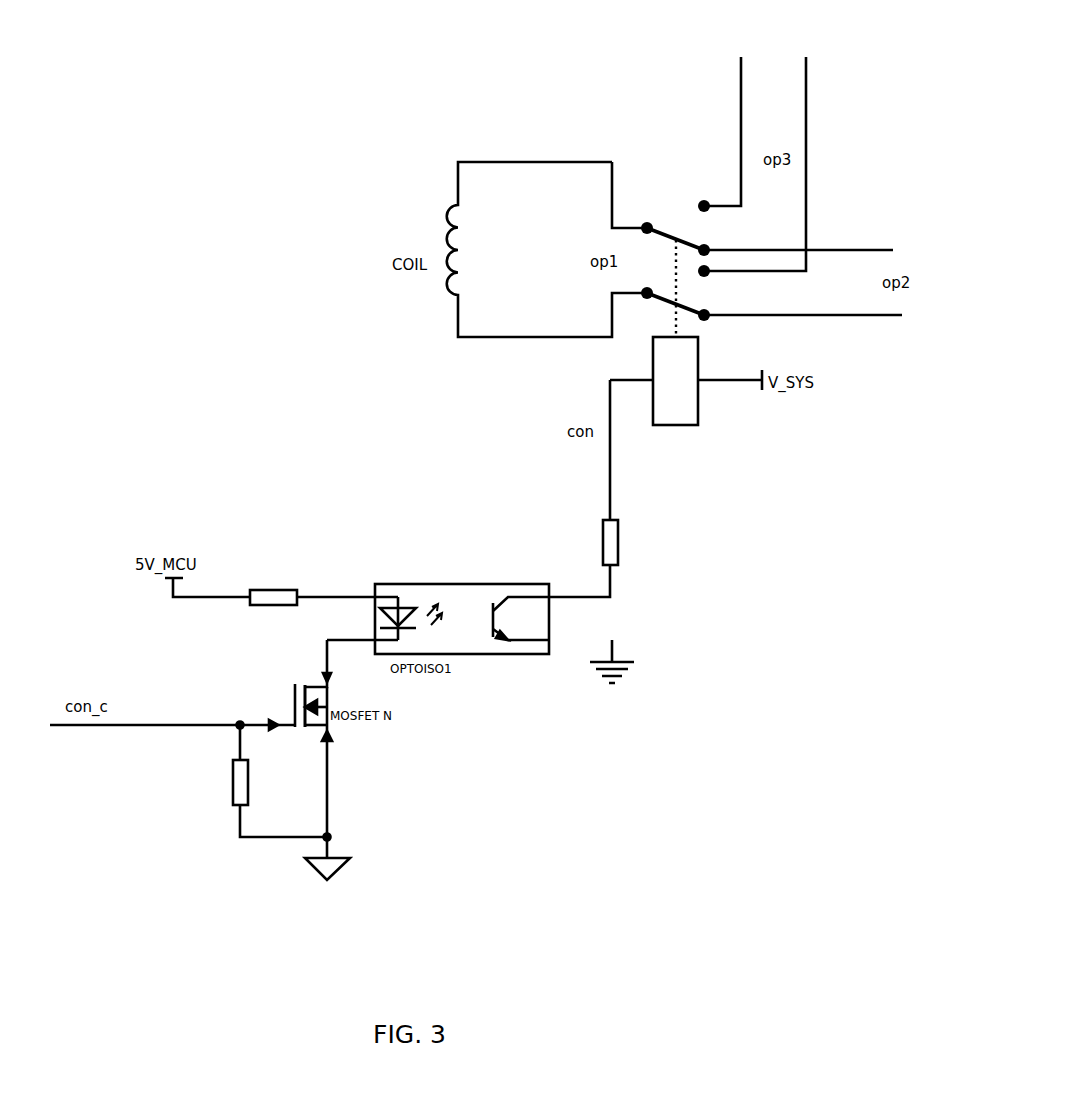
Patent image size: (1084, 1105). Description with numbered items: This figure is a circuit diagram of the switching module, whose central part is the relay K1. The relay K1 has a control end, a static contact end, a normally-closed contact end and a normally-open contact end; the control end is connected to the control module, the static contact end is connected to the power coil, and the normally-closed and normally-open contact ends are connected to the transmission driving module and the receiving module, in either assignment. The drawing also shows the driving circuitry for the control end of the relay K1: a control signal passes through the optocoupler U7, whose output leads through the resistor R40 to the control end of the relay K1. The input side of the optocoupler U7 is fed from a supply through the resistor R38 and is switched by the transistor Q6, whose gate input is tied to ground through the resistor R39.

The relay K1 is at (680, 399).
The resistor R40 is at (632, 541).
The optocoupler U7 is at (458, 608).
The resistor R38 is at (272, 588).
The N-channel MOSFET Q6 is at (323, 705).
The resistor R39 is at (256, 782).